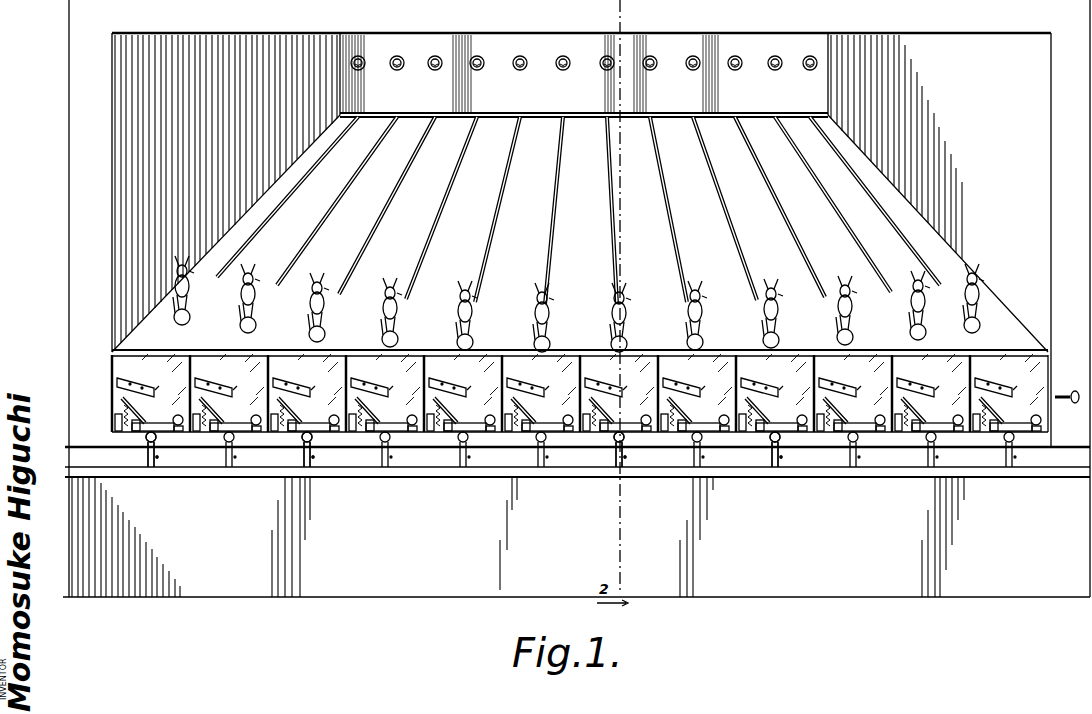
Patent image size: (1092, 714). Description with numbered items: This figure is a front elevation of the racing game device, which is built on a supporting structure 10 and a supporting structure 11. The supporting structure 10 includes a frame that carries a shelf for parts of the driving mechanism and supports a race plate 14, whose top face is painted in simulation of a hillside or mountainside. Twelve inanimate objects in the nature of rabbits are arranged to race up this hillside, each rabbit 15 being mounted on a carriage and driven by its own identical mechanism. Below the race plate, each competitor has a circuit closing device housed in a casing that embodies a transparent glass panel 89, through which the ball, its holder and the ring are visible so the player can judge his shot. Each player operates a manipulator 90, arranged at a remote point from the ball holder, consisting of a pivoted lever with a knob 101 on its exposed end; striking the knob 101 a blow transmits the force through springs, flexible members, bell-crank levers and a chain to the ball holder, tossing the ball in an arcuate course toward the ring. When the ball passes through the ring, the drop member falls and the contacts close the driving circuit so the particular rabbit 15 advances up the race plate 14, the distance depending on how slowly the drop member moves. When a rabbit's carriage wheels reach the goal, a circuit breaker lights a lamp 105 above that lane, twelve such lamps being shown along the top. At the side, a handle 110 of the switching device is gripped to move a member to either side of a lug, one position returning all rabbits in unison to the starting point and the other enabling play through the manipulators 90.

The supporting structure 10 is at (62, 250).
The supporting structure 11 is at (577, 522).
The race plate 14 is at (580, 234).
The rabbit 15 is at (458, 318).
The transparent glass panel 89 is at (228, 384).
The manipulator 90 is at (152, 468).
The knob 101 is at (309, 468).
The lamp 105 is at (362, 60).
The handle 110 is at (1069, 387).